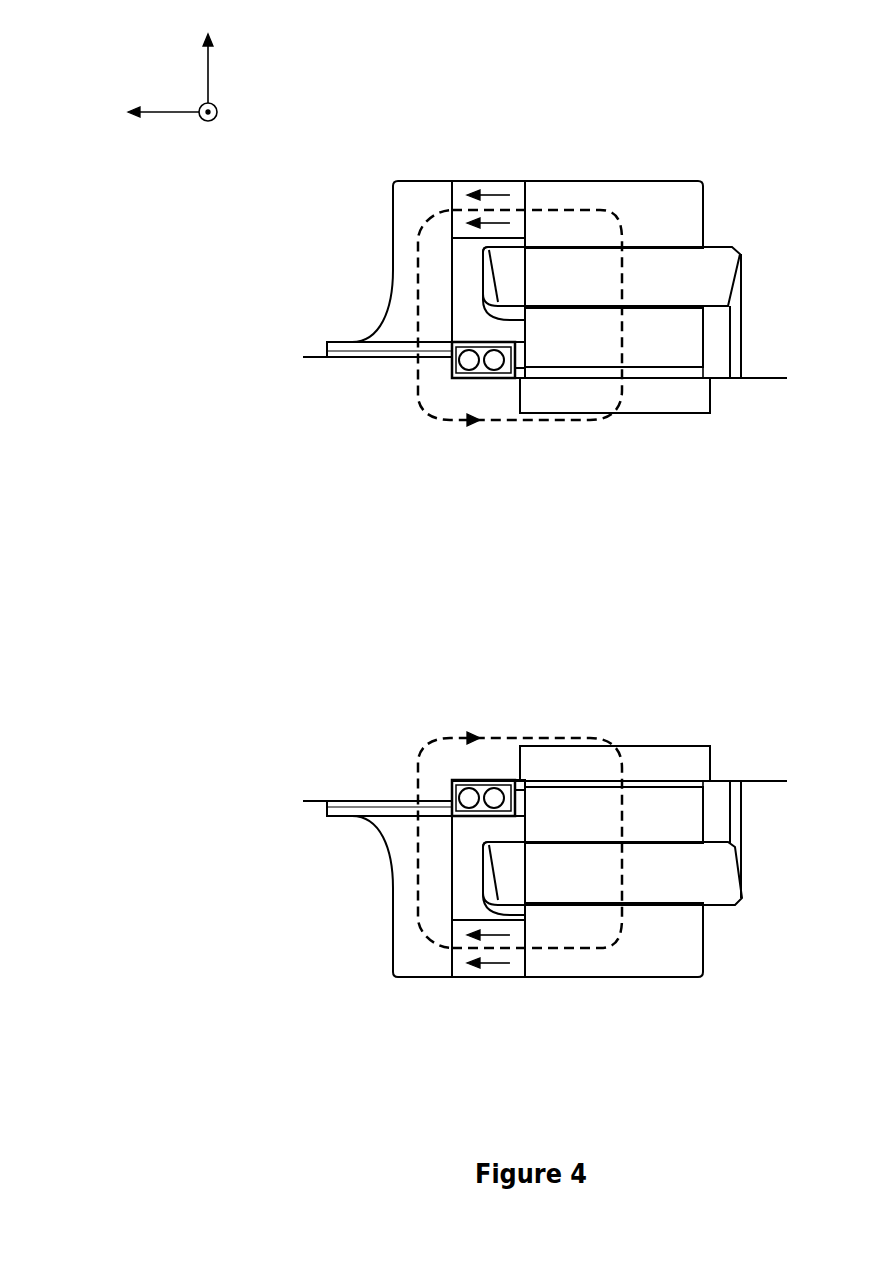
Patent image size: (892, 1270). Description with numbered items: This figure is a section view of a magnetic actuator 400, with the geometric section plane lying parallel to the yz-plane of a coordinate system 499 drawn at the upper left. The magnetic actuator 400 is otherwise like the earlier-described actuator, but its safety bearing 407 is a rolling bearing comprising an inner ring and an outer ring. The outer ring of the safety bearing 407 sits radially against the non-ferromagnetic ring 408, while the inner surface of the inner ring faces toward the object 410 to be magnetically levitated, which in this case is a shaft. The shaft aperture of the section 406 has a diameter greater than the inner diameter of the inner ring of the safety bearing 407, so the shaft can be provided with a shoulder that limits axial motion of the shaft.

The magnetic actuator 400 is at (298, 863).
The section 406 is at (425, 180).
The safety bearing 407 is at (450, 345).
The non-ferromagnetic ring 408 is at (467, 289).
The object to be magnetically levitated 410 is at (600, 587).
The coordinate system 499 is at (188, 84).